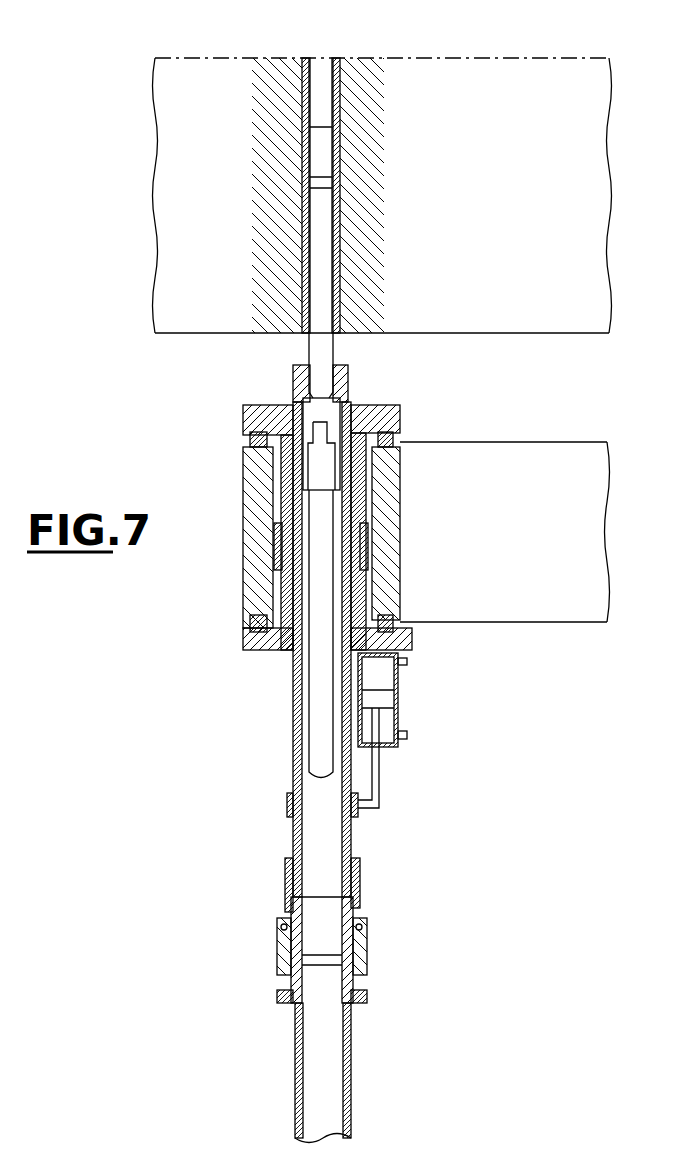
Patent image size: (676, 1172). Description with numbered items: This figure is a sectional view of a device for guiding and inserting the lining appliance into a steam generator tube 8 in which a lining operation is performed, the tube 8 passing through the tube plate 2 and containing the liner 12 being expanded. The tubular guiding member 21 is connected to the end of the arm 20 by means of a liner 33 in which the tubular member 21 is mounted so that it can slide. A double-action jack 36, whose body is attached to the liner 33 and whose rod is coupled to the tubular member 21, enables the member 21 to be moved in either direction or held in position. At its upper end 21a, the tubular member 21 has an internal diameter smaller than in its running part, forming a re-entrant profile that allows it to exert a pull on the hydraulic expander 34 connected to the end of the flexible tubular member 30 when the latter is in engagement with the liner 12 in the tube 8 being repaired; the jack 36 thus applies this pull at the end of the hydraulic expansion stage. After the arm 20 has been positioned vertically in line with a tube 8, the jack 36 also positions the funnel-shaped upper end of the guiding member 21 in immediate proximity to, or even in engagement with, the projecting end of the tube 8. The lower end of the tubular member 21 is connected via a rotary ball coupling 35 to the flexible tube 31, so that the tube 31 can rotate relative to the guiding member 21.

The wall / table top 2 is at (424, 81).
The tube 8 is at (340, 225).
The liner 12 is at (338, 150).
The flexible tubular member 30 is at (321, 296).
The upper end of the tubular member 21a is at (292, 381).
The hydraulic expander 34 is at (330, 410).
The liner 33 is at (393, 423).
The arm 20 is at (392, 481).
The tubular guiding member 21 is at (352, 840).
The double-action jack 36 is at (396, 703).
The rotary ball coupling 35 is at (358, 903).
The flexible tube 31 is at (345, 1070).